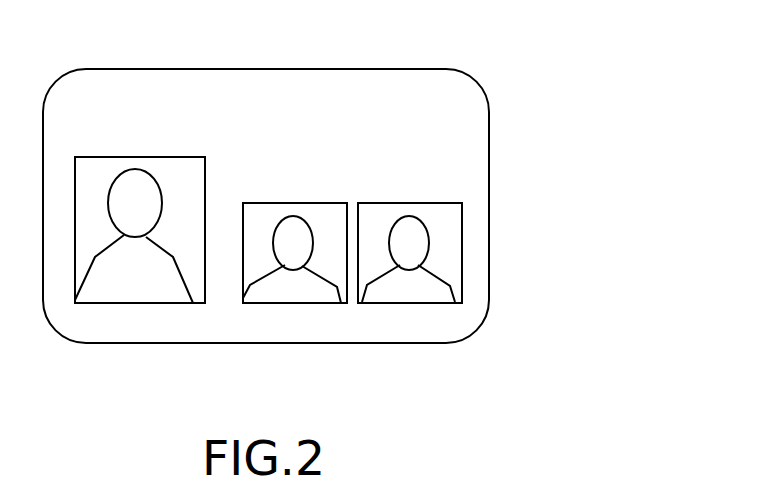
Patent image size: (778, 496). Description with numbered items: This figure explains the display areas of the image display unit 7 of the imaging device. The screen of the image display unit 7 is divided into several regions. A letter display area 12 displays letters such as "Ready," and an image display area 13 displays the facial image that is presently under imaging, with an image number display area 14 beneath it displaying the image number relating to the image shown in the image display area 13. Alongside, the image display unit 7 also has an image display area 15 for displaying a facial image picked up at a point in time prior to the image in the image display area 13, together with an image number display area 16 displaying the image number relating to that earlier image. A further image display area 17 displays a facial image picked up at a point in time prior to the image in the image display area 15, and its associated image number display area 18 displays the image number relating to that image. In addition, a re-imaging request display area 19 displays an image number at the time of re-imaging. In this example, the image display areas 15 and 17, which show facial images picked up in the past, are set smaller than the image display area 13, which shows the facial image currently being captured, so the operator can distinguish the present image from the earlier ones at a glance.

The image display unit 7 is at (89, 69).
The letter display area 12 is at (145, 100).
The re-imaging request display area 19 is at (435, 112).
The image display area 13 is at (75, 303).
The image number display area 14 is at (140, 340).
The image display area 15 is at (243, 302).
The image number display area 16 is at (292, 335).
The image display area 17 is at (463, 287).
The image number display area 18 is at (412, 335).